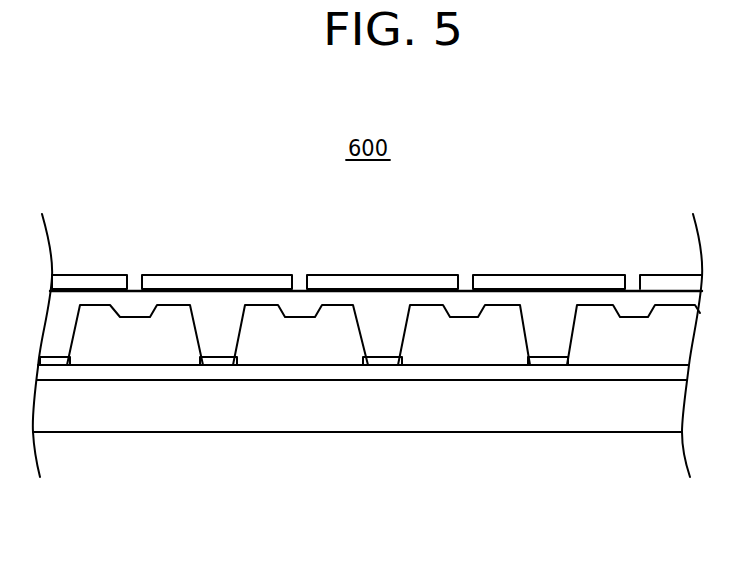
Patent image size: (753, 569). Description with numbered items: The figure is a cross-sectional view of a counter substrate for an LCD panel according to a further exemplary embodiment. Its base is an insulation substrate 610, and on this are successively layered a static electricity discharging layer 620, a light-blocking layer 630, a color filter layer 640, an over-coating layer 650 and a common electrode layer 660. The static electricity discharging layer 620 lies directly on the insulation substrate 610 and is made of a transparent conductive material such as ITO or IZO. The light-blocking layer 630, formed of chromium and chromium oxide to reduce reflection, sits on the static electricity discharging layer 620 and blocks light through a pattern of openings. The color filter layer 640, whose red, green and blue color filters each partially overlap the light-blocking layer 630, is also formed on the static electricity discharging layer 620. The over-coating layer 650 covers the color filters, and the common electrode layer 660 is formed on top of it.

The insulation substrate 610 is at (628, 403).
The static electricity discharging layer 620 is at (540, 372).
The light-blocking layer 630 is at (390, 358).
The color filter layer 640 is at (317, 343).
The over-coating layer 650 is at (225, 317).
The common electrode layer 660 is at (212, 283).